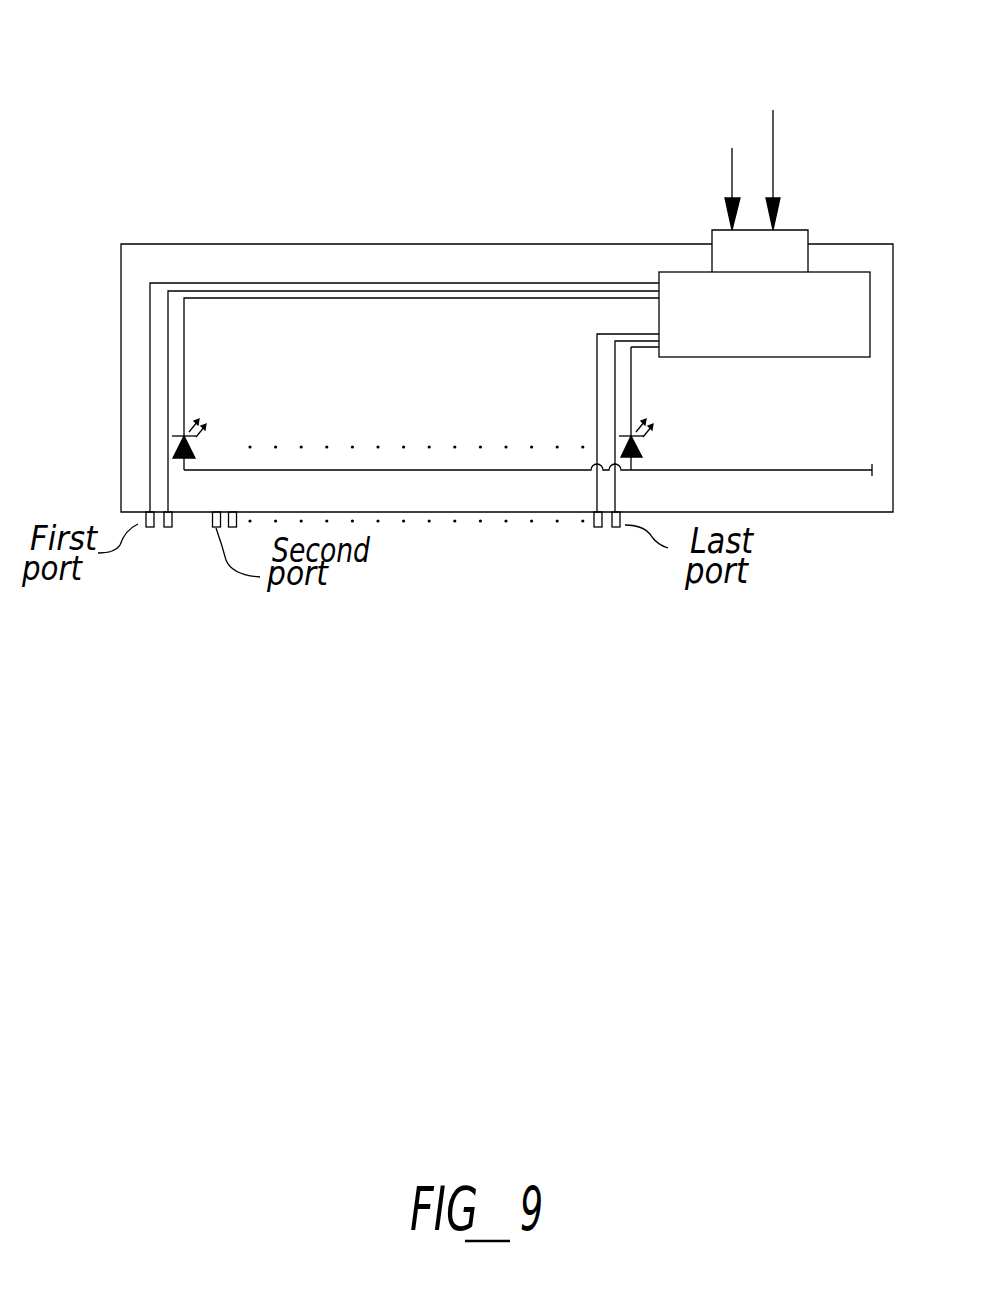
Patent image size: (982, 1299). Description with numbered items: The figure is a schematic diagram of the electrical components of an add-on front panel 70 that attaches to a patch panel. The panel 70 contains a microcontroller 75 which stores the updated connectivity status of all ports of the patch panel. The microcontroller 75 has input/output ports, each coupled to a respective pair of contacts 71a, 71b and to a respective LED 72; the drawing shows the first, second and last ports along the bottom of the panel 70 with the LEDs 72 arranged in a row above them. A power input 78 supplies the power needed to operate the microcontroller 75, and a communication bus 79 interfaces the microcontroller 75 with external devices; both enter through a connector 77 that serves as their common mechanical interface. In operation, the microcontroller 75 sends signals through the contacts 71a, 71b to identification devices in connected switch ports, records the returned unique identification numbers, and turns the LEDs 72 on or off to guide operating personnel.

The front panel 70 is at (339, 220).
The contact 71a is at (151, 528).
The contact 71b is at (168, 528).
The LED 72 is at (203, 448).
The microcontroller 75 is at (764, 344).
The connector 77 is at (793, 250).
The power input 78 is at (727, 162).
The communication bus 79 is at (775, 180).